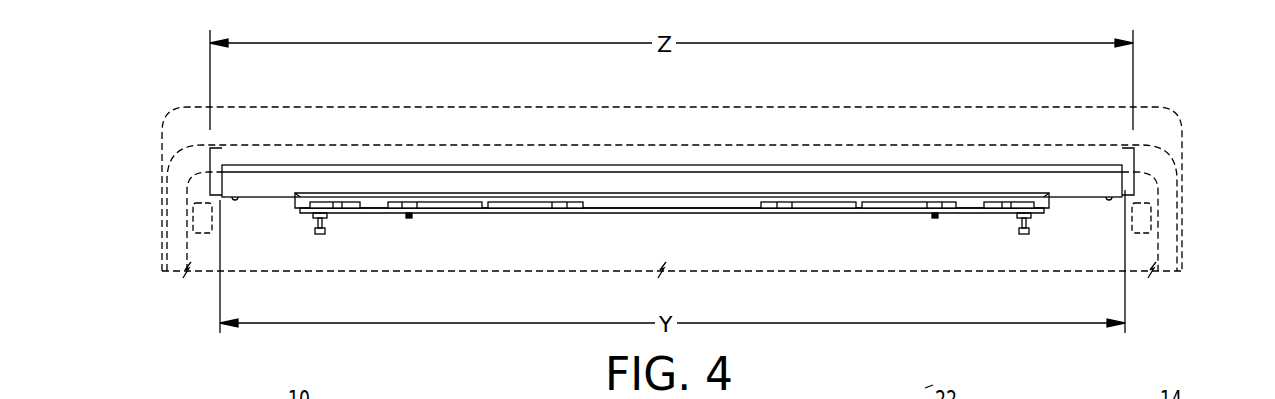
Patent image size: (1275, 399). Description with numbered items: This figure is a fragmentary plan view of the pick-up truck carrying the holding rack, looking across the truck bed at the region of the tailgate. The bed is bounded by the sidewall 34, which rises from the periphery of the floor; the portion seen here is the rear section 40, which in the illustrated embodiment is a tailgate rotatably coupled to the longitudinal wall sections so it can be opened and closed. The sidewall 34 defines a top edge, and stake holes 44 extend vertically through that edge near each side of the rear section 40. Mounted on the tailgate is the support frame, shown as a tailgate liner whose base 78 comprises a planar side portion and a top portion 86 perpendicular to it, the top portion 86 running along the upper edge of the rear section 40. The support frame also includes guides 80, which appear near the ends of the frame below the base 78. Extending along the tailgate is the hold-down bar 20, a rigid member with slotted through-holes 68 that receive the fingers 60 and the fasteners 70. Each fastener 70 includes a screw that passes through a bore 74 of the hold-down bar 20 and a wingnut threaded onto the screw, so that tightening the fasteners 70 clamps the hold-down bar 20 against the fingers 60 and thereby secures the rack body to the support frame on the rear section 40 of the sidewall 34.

The hold-down bar 20 is at (650, 207).
The sidewall 34 is at (1145, 256).
The rear section 40 is at (995, 188).
The stake holes 44 is at (192, 206).
The fingers 60 is at (488, 206).
The slotted through-holes 68 is at (535, 205).
The fasteners 70 is at (408, 216).
The bore 74 is at (412, 205).
The base 78 is at (1108, 185).
The guides 80 is at (296, 210).
The top portion 86 is at (878, 188).